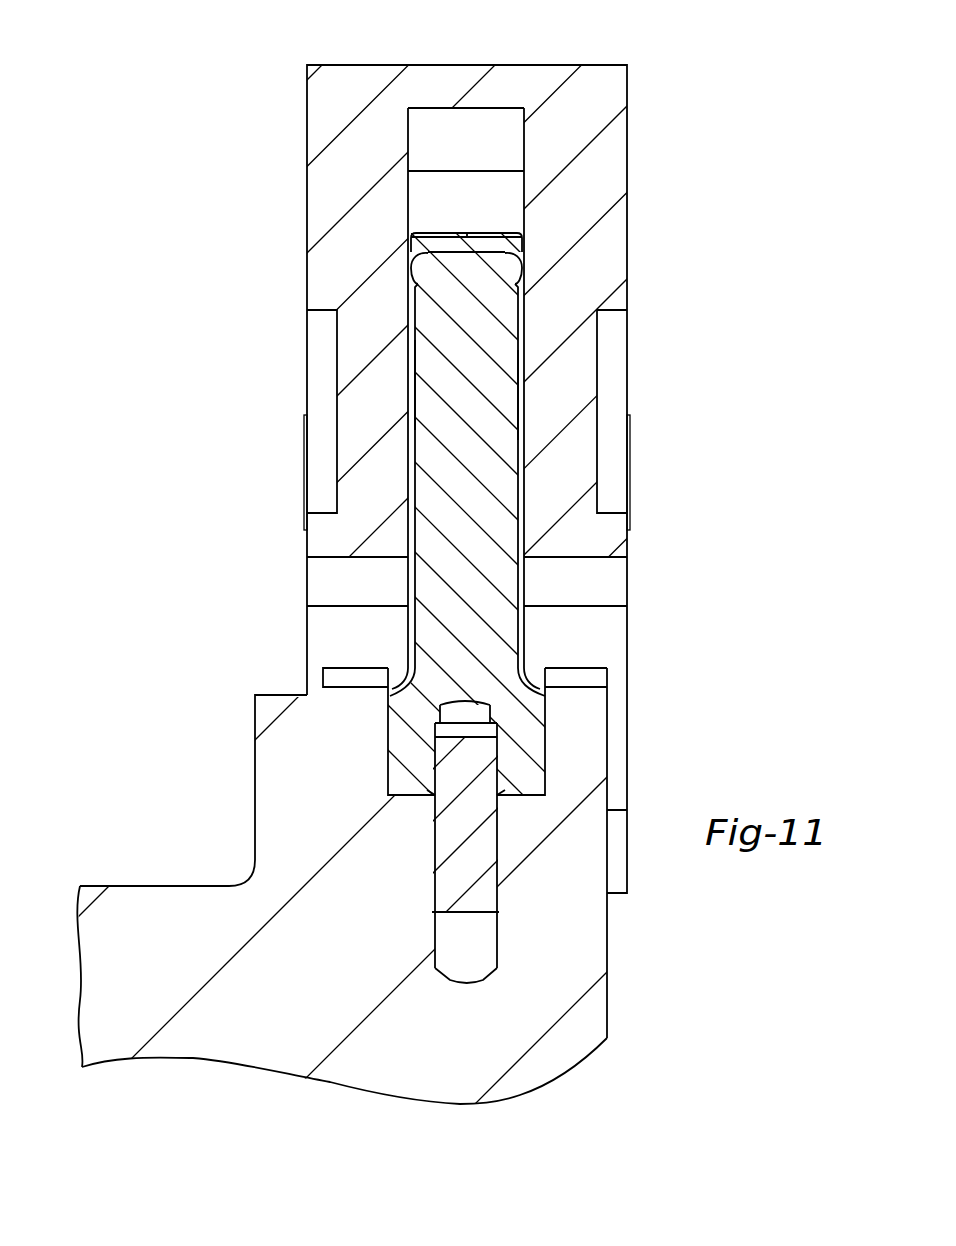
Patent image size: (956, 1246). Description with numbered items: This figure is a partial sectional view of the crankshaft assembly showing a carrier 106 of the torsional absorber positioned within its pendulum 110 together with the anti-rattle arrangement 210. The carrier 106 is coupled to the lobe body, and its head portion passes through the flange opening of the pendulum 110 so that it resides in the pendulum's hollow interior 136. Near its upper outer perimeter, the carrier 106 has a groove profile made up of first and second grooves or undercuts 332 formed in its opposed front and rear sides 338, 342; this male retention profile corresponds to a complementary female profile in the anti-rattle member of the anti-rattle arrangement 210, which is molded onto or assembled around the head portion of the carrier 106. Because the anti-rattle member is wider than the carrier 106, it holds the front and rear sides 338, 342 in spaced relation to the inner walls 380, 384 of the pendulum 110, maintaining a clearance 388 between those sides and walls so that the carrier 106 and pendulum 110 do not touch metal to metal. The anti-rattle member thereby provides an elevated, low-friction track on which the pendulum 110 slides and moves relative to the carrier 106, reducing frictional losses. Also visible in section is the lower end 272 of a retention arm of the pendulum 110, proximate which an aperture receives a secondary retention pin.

The pendulum 110 is at (385, 63).
The hollow interior 136 is at (483, 147).
The anti-rattle arrangement 210 is at (457, 233).
The lower end 272 is at (418, 282).
The grooves 332 is at (523, 277).
The inner wall 380 is at (413, 390).
The inner wall 384 is at (522, 390).
The front side 338 is at (413, 482).
The rear side 342 is at (520, 490).
The clearance 388 is at (410, 586).
The carrier 106 is at (482, 648).